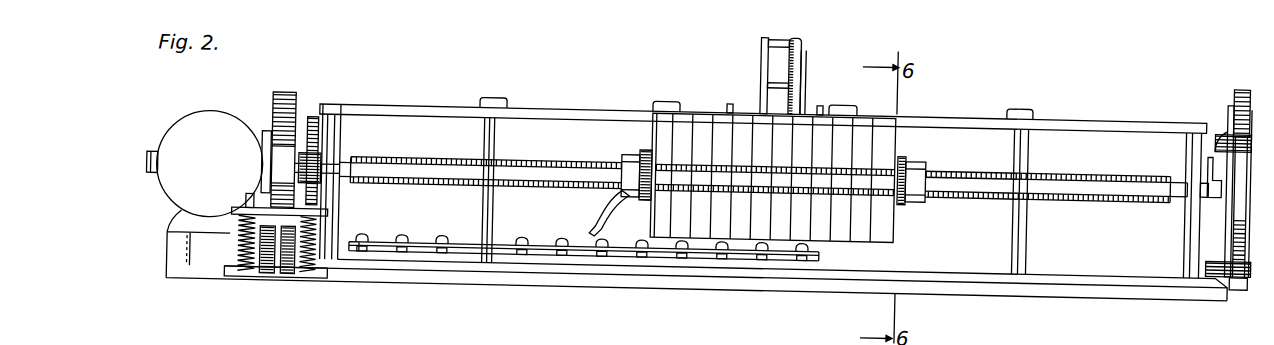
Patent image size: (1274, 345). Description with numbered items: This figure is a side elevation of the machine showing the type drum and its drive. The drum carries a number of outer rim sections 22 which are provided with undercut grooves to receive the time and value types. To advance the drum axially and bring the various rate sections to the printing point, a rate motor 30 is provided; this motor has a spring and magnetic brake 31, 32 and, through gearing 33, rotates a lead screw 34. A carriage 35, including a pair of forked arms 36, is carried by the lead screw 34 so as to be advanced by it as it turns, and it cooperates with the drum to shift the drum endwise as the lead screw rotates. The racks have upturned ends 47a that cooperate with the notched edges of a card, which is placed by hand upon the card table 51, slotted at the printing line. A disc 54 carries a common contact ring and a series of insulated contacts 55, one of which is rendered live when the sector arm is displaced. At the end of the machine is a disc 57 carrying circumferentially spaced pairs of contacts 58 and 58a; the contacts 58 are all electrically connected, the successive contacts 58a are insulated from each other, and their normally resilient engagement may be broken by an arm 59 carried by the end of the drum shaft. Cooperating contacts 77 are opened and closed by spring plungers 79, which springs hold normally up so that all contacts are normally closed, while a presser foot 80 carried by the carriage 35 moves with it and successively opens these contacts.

The outer rim sections 22 is at (681, 114).
The rate motor 30 is at (209, 163).
The spring brake 31 is at (288, 97).
The magnetic brake 32 is at (269, 270).
The gearing 33 is at (321, 142).
The lead screw 34 is at (404, 182).
The carriage 35 is at (875, 181).
The forked arms 36 is at (641, 145).
The upturned ends 47a is at (730, 95).
The card table 51 is at (433, 102).
The disc 54 is at (802, 62).
The insulated contacts 55 is at (789, 27).
The disc 57 is at (1242, 71).
The contacts 58 is at (1230, 87).
The contacts 58a is at (1253, 225).
The arm 59 is at (1214, 144).
The contacts 77 is at (608, 251).
The spring plungers 79 is at (529, 232).
The presser foot 80 is at (613, 207).